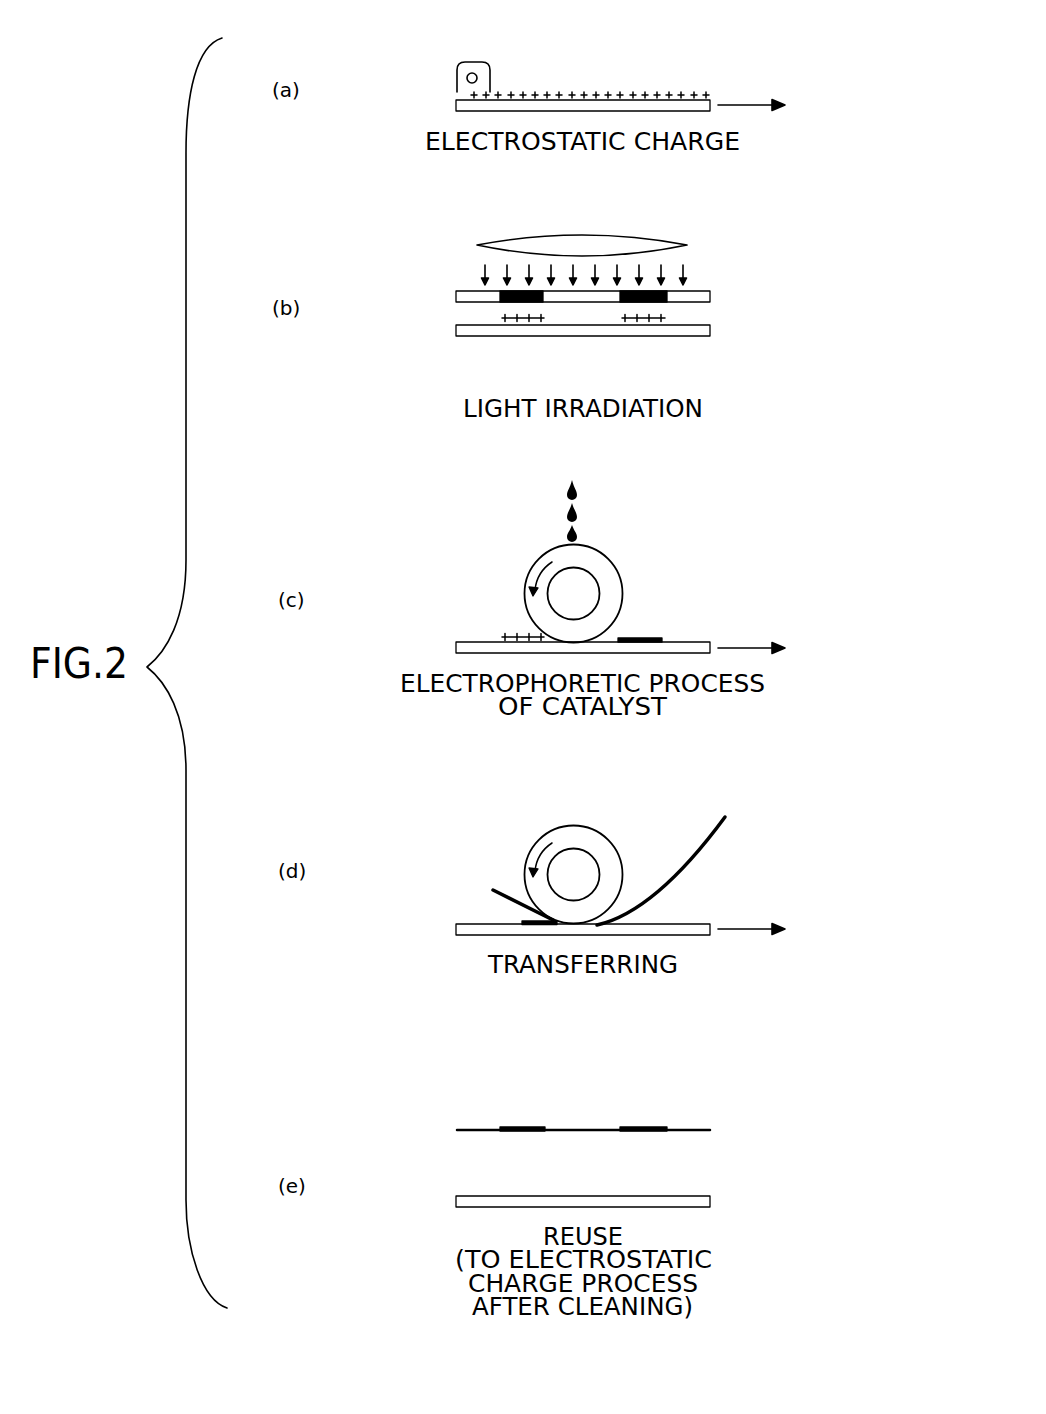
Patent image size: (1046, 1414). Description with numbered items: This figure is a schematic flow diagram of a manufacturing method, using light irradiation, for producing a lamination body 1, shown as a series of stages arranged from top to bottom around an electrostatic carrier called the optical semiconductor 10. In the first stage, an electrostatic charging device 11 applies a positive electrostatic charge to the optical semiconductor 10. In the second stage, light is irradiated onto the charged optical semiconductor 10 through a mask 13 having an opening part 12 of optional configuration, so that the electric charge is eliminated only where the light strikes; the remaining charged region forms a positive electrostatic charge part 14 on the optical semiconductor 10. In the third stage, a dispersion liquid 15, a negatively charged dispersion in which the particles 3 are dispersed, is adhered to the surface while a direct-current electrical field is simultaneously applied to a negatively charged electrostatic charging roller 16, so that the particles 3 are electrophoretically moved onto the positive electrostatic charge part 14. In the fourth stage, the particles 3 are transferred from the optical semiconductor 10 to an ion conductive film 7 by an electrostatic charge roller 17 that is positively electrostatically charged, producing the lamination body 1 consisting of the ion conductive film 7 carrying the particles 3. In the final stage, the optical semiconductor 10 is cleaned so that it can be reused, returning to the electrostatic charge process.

The lamination body 1 is at (724, 1093).
The particles 3 is at (645, 638).
The ion conductive film 7 is at (711, 835).
The optical semiconductor 10 is at (456, 106).
The electrostatic charging device 11 is at (474, 62).
The opening part 12 is at (477, 290).
The mask 13 is at (456, 297).
The positive electrostatic charge part 14 is at (666, 318).
The dispersion liquid 15 is at (565, 487).
The electrostatic charging roller 16 is at (612, 561).
The electrostatic charge roller 17 is at (612, 842).